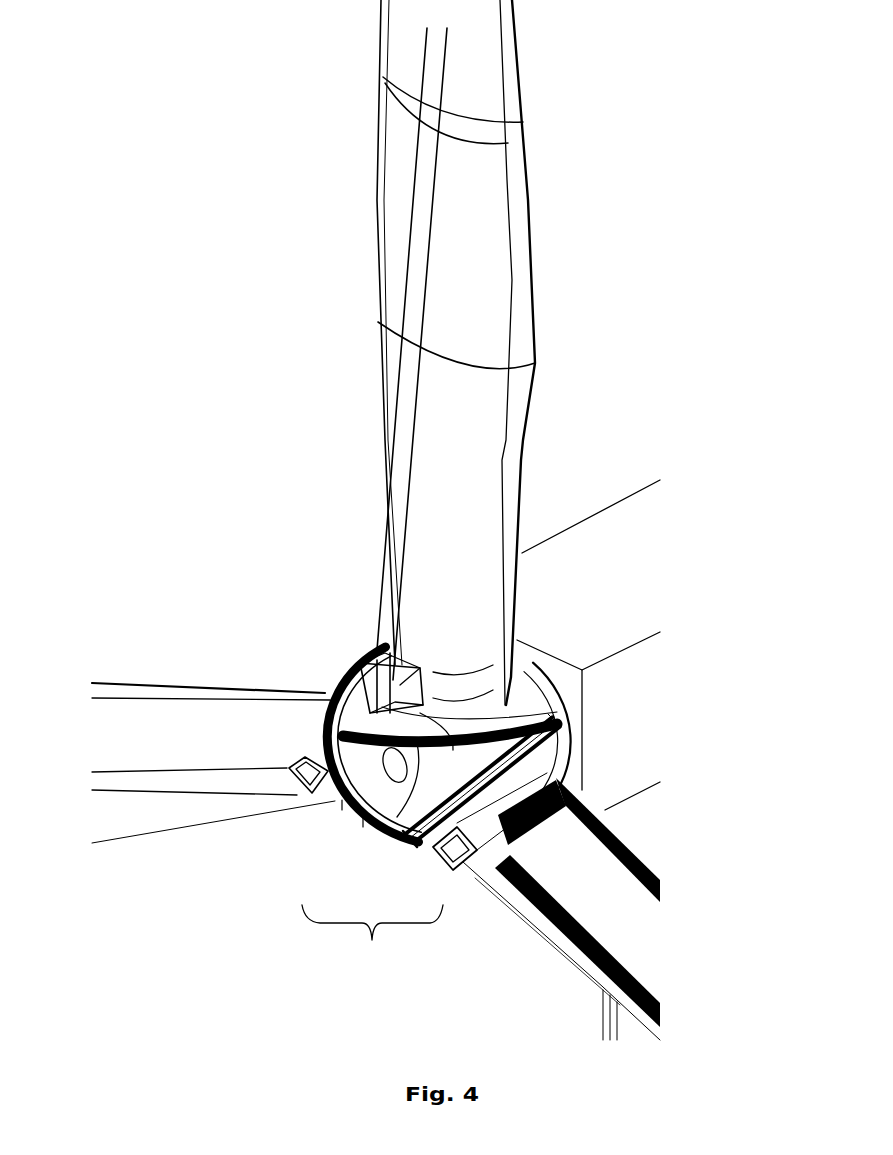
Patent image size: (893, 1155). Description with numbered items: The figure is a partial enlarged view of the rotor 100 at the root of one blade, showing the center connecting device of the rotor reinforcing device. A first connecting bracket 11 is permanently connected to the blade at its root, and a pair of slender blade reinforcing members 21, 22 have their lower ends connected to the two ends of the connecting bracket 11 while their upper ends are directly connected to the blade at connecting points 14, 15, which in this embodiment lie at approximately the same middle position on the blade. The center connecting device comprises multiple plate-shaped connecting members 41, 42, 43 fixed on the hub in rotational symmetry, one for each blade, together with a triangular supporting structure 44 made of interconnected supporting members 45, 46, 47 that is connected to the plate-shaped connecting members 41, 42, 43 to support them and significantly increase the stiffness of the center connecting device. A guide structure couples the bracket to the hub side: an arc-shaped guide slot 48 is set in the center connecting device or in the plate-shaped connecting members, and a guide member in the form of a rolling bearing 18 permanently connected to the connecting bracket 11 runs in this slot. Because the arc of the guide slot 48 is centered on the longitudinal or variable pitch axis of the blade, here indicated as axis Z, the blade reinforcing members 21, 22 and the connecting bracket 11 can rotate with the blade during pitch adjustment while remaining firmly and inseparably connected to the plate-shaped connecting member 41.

The rotor 100 is at (608, 121).
The connecting point 14 is at (427, 28).
The connecting point 15 is at (447, 28).
The blade reinforcing member 21 is at (377, 603).
The blade reinforcing member 22 is at (397, 575).
The connecting bracket 11 is at (340, 670).
The rolling bearing 18 is at (325, 700).
The guide slot 48 is at (563, 720).
The plate-shaped connecting member 41 is at (560, 697).
The plate-shaped connecting member 42 is at (553, 735).
The plate-shaped connecting member 43 is at (343, 742).
The supporting structure 44 is at (372, 939).
The supporting member 45 is at (395, 827).
The supporting member 46 is at (363, 827).
The supporting member 47 is at (342, 810).
The Z axis Z is at (588, 645).